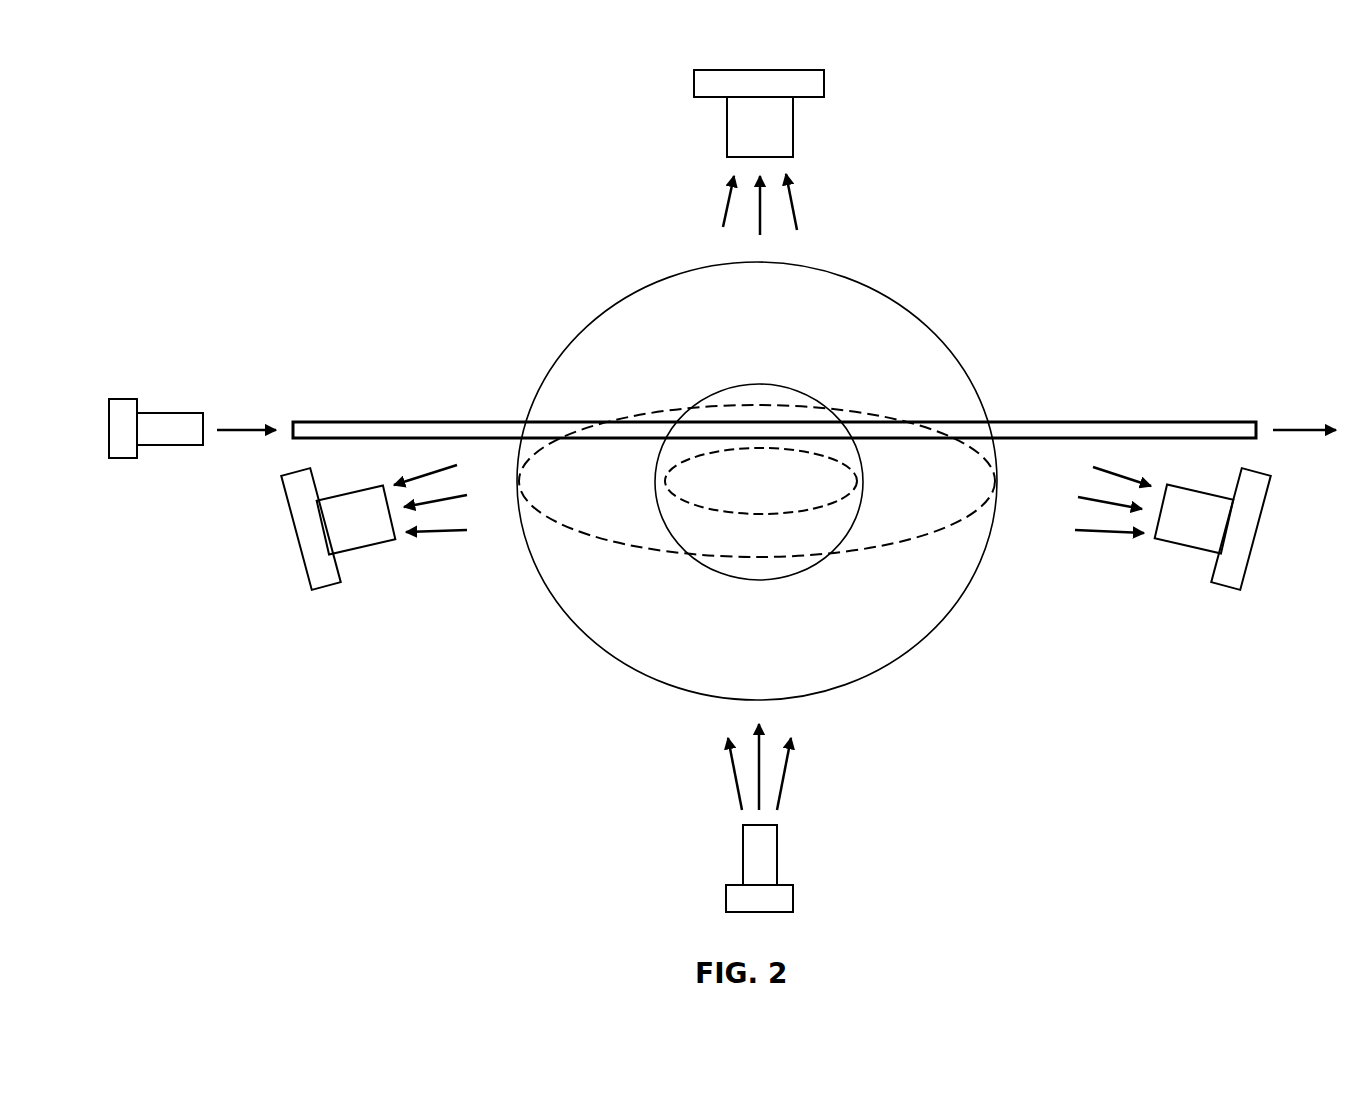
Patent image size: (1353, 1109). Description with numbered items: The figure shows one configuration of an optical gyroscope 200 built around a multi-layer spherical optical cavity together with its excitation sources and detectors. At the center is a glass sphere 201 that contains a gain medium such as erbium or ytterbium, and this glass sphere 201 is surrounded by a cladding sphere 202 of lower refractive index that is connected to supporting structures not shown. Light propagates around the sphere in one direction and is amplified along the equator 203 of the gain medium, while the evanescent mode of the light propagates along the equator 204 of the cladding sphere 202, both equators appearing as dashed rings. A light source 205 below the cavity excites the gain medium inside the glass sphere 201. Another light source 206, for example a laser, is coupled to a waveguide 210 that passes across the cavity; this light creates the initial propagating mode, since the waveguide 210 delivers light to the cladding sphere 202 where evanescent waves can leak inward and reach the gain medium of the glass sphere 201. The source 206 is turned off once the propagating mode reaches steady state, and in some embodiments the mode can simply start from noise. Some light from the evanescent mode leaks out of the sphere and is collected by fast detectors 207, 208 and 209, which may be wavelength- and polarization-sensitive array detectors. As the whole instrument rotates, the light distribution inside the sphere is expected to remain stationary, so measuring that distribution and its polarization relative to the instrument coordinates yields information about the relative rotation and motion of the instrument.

The inspection system 200 is at (1150, 174).
The glass sphere 201 is at (777, 385).
The cladding sphere 202 is at (600, 320).
The equator of the gain medium 203 is at (755, 517).
The equator of the cladding sphere 204 is at (910, 543).
The light source 205 is at (782, 885).
The light source 206 is at (172, 448).
The fast detector 207 is at (320, 587).
The fast detector 208 is at (1230, 587).
The fast detector 209 is at (792, 105).
The waveguide 210 is at (1177, 422).